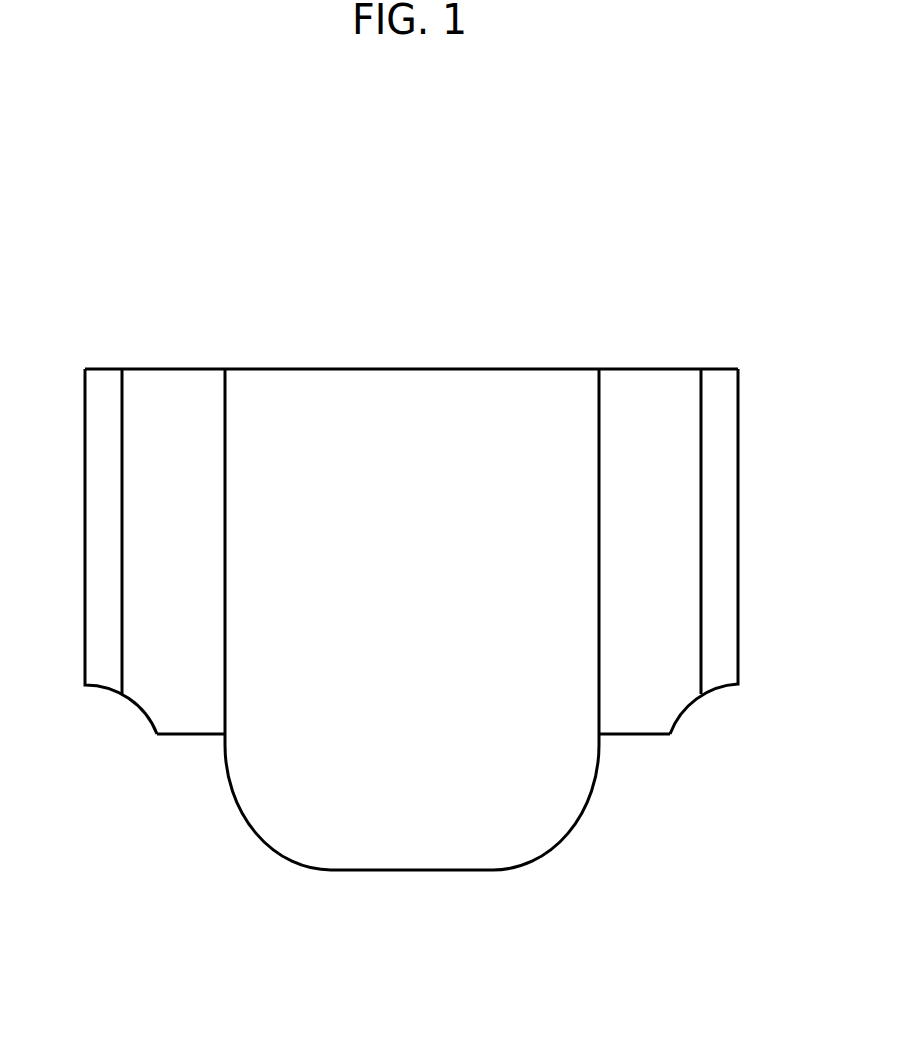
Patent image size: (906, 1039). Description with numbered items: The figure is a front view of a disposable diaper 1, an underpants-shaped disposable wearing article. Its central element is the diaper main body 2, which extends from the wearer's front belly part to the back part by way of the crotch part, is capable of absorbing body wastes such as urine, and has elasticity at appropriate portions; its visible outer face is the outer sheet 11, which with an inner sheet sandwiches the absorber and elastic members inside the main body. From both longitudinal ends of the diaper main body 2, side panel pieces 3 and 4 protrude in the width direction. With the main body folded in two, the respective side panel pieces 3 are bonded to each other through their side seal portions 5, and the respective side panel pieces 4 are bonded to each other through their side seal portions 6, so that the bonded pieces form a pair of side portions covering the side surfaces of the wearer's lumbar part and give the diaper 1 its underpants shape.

The disposable diaper 1 is at (704, 268).
The diaper main body 2 is at (411, 578).
The outer sheet 11 is at (453, 380).
The side panel piece 3 is at (627, 380).
The side panel piece 4 is at (165, 378).
The side seal portion 5 is at (725, 523).
The side seal portion 6 is at (97, 524).